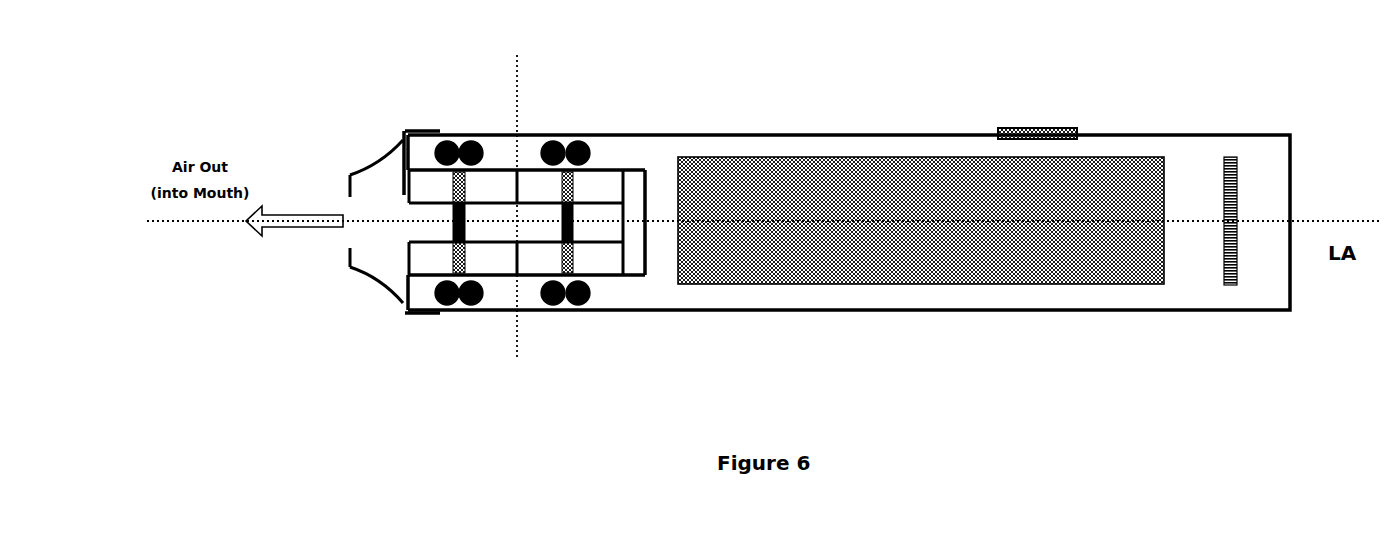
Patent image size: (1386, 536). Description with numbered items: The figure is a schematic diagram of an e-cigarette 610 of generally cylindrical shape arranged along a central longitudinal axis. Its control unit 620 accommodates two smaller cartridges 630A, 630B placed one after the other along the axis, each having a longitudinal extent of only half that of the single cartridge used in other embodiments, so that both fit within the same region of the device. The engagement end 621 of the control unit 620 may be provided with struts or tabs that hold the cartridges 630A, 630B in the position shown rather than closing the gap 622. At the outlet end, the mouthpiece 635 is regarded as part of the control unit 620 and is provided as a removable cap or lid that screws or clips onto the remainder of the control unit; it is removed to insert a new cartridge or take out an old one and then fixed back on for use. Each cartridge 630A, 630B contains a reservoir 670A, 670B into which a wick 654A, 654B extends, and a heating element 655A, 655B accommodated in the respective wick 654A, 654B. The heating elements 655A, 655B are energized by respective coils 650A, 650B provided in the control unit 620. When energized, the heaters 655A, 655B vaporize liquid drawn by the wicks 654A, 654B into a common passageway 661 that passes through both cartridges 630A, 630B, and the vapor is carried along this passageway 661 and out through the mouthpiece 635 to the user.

The e-cigarette 610 is at (1160, 108).
The control unit 620 is at (1197, 320).
The engagement end 621 is at (652, 248).
The gap 622 is at (633, 260).
The first cartridge 630A is at (439, 118).
The second cartridge 630B is at (610, 123).
The mouthpiece 635 is at (342, 273).
The first coil 650A is at (462, 320).
The second coil 650B is at (572, 323).
The first wick 654A is at (455, 186).
The second wick 654B is at (572, 183).
The first heating element 655A is at (452, 213).
The second heating element 655B is at (577, 228).
The common passageway 661 is at (498, 227).
The first reservoir 670A is at (425, 255).
The second reservoir 670B is at (538, 255).